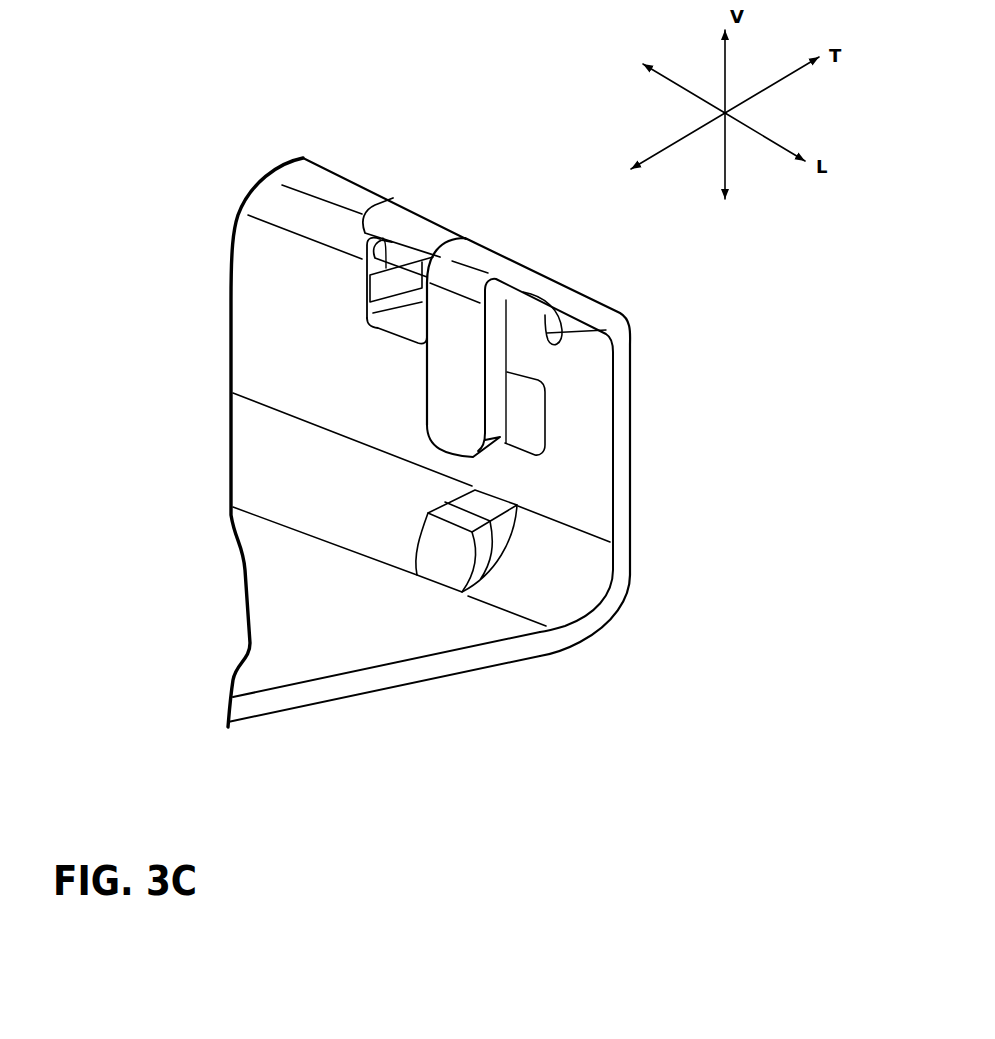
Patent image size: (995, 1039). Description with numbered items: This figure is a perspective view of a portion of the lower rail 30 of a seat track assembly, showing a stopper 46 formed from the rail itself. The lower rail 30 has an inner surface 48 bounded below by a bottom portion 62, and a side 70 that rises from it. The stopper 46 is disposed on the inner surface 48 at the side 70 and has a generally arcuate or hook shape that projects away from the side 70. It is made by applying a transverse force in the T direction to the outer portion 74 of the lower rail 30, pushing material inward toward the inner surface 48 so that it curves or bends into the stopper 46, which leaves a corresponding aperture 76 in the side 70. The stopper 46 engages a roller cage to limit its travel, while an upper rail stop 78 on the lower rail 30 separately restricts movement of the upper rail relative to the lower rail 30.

The lower rail 30 is at (356, 169).
The stopper 46 is at (457, 556).
The inner surface 48 is at (311, 591).
The bottom portion 62 is at (433, 681).
The side 70 is at (635, 465).
The outer portion 74 is at (635, 388).
The aperture 76 is at (518, 526).
The upper rail stop 78 is at (414, 262).